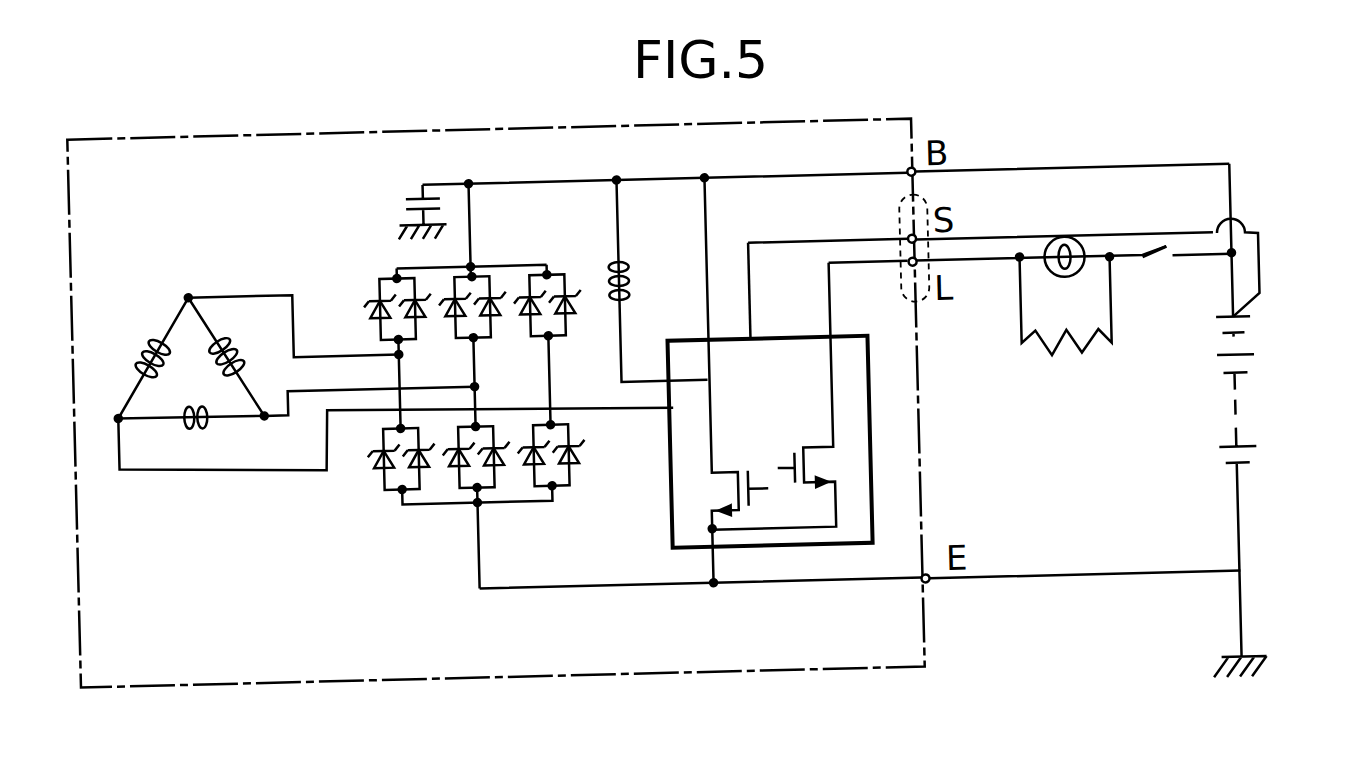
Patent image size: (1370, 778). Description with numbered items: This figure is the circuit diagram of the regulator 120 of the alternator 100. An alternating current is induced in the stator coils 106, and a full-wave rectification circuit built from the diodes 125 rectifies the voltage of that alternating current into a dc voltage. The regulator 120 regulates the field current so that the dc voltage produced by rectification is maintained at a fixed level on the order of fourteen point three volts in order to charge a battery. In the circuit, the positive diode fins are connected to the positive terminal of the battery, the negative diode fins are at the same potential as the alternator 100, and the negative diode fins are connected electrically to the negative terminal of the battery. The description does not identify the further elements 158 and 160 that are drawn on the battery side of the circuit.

The alternator 100 is at (612, 251).
The stator coils 106 is at (177, 294).
The regulator 120 is at (669, 499).
The diodes 125 is at (375, 492).
The key switch 158 is at (1163, 276).
The battery 160 is at (1258, 469).